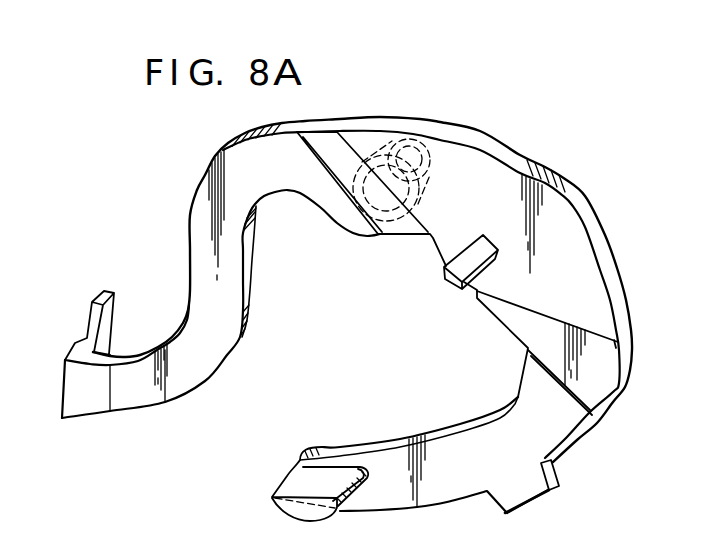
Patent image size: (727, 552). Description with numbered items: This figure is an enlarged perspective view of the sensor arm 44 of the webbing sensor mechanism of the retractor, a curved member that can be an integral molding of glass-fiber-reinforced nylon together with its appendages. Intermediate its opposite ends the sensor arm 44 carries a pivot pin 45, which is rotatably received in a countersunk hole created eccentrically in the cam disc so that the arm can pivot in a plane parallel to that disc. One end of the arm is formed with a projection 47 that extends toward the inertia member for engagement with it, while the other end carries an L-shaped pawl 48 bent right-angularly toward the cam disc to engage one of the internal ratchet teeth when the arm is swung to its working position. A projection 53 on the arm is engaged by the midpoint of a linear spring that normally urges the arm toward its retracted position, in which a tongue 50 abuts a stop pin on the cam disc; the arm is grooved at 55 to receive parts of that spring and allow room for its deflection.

The sensor arm 44 is at (563, 181).
The pivot pin 45 is at (430, 155).
The projection 47 is at (345, 508).
The L-shaped pawl 48 is at (88, 320).
The tongue 50 is at (553, 481).
The projection 53 is at (472, 252).
The groove 55 is at (330, 146).